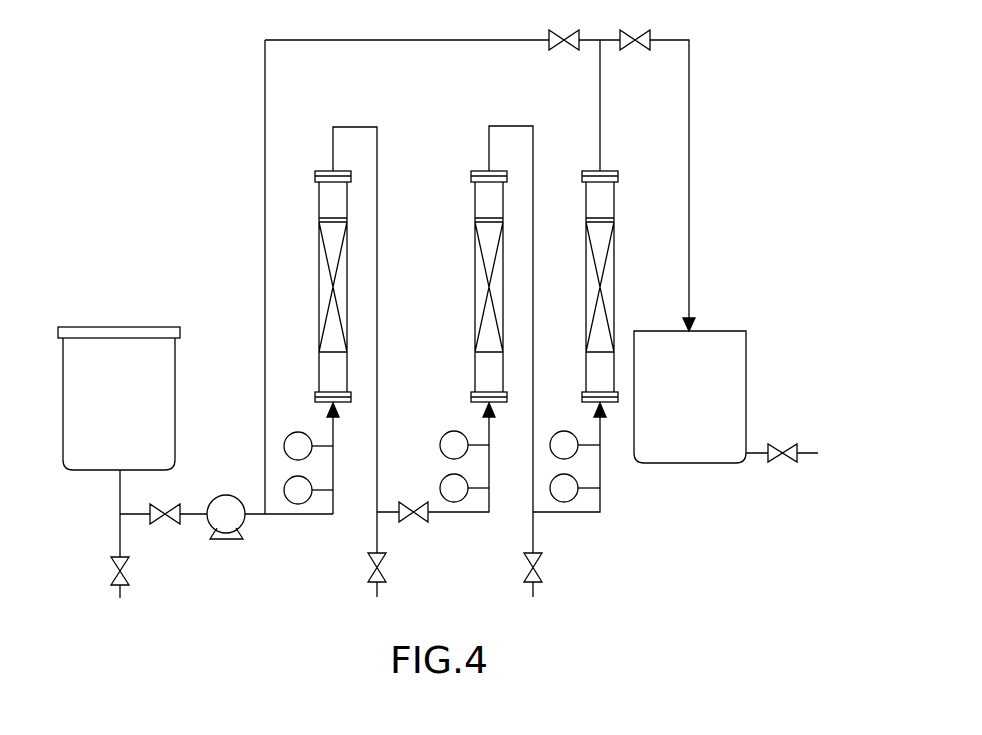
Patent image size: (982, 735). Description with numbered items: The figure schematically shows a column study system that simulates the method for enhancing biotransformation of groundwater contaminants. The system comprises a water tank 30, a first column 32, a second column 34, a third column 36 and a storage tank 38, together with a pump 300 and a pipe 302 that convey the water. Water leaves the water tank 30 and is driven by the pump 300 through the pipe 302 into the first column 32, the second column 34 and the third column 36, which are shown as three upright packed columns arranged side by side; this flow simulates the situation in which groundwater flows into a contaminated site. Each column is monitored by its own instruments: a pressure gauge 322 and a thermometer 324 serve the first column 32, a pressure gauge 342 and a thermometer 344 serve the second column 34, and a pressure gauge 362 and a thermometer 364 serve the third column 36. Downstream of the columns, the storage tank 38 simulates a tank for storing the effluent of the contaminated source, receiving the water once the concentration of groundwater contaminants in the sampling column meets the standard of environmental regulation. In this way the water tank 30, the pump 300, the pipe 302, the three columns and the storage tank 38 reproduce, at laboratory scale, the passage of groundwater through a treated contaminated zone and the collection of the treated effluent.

The water tank 30 is at (98, 352).
The pump 300 is at (228, 505).
The pipe 302 is at (265, 163).
The first column 32 is at (320, 288).
The pressure gauge 322 is at (300, 432).
The thermometer 324 is at (298, 504).
The second column 34 is at (476, 288).
The pressure gauge 342 is at (457, 431).
The thermometer 344 is at (452, 502).
The third column 36 is at (587, 288).
The pressure gauge 362 is at (567, 431).
The thermometer 364 is at (563, 502).
The storage tank 38 is at (717, 345).